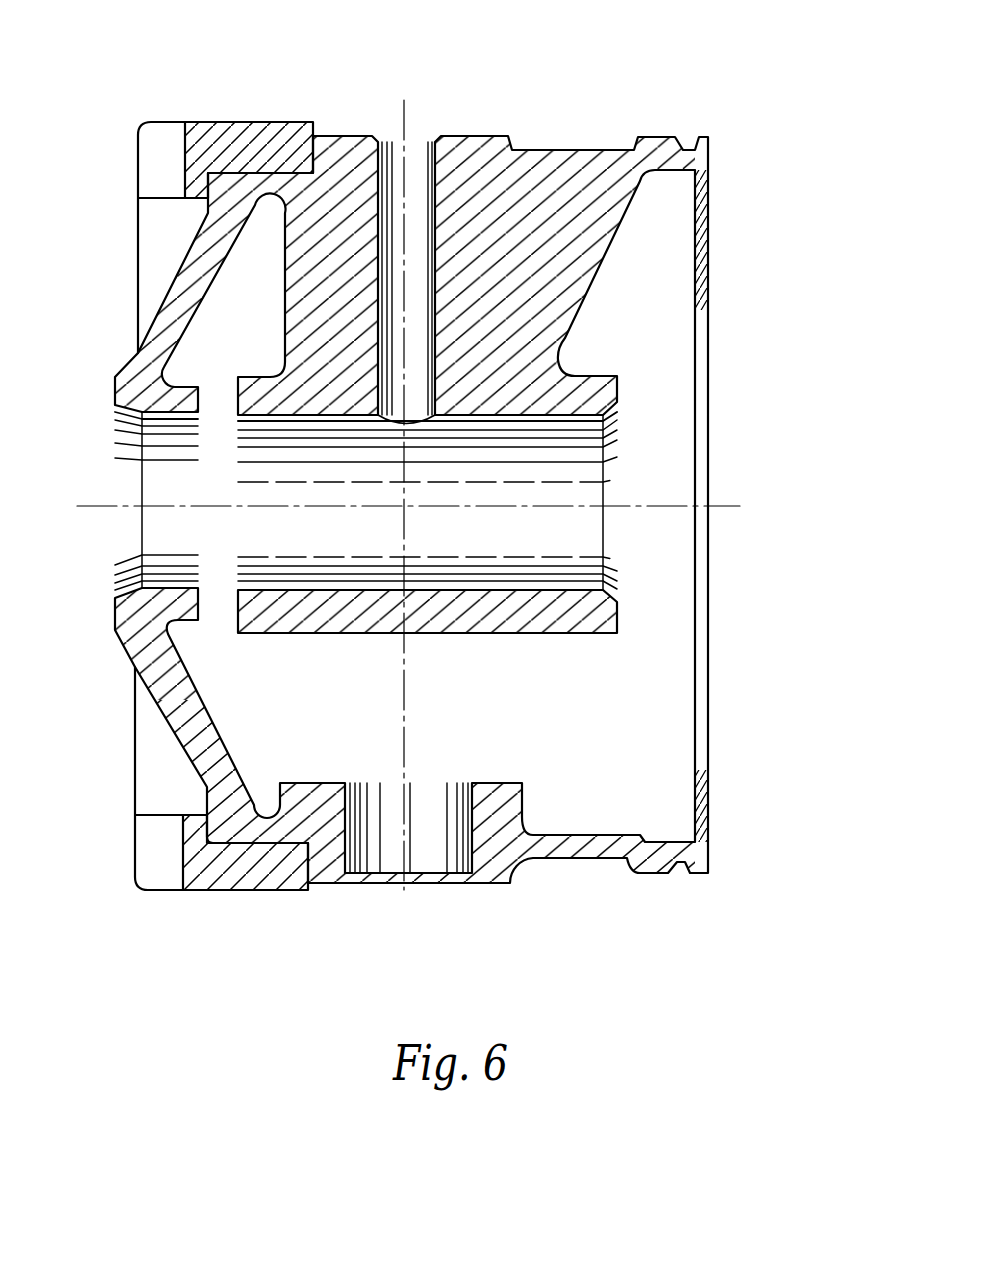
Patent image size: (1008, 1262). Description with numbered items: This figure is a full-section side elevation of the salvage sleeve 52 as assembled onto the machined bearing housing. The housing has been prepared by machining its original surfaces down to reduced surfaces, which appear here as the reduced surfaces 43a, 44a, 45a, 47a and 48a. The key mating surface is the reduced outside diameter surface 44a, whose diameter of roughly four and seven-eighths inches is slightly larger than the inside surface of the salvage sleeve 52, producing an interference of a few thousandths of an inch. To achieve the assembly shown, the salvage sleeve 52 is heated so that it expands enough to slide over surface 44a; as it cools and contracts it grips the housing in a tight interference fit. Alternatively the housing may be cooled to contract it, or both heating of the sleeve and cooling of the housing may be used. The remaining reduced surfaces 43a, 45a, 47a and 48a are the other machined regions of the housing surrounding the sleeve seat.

The reduced surface 43a is at (298, 163).
The reduced outside diameter surface 44a is at (248, 167).
The reduced surface 45a is at (208, 214).
The reduced surface 47a is at (710, 150).
The reduced surface 48a is at (618, 393).
The salvage sleeve 52 is at (210, 890).